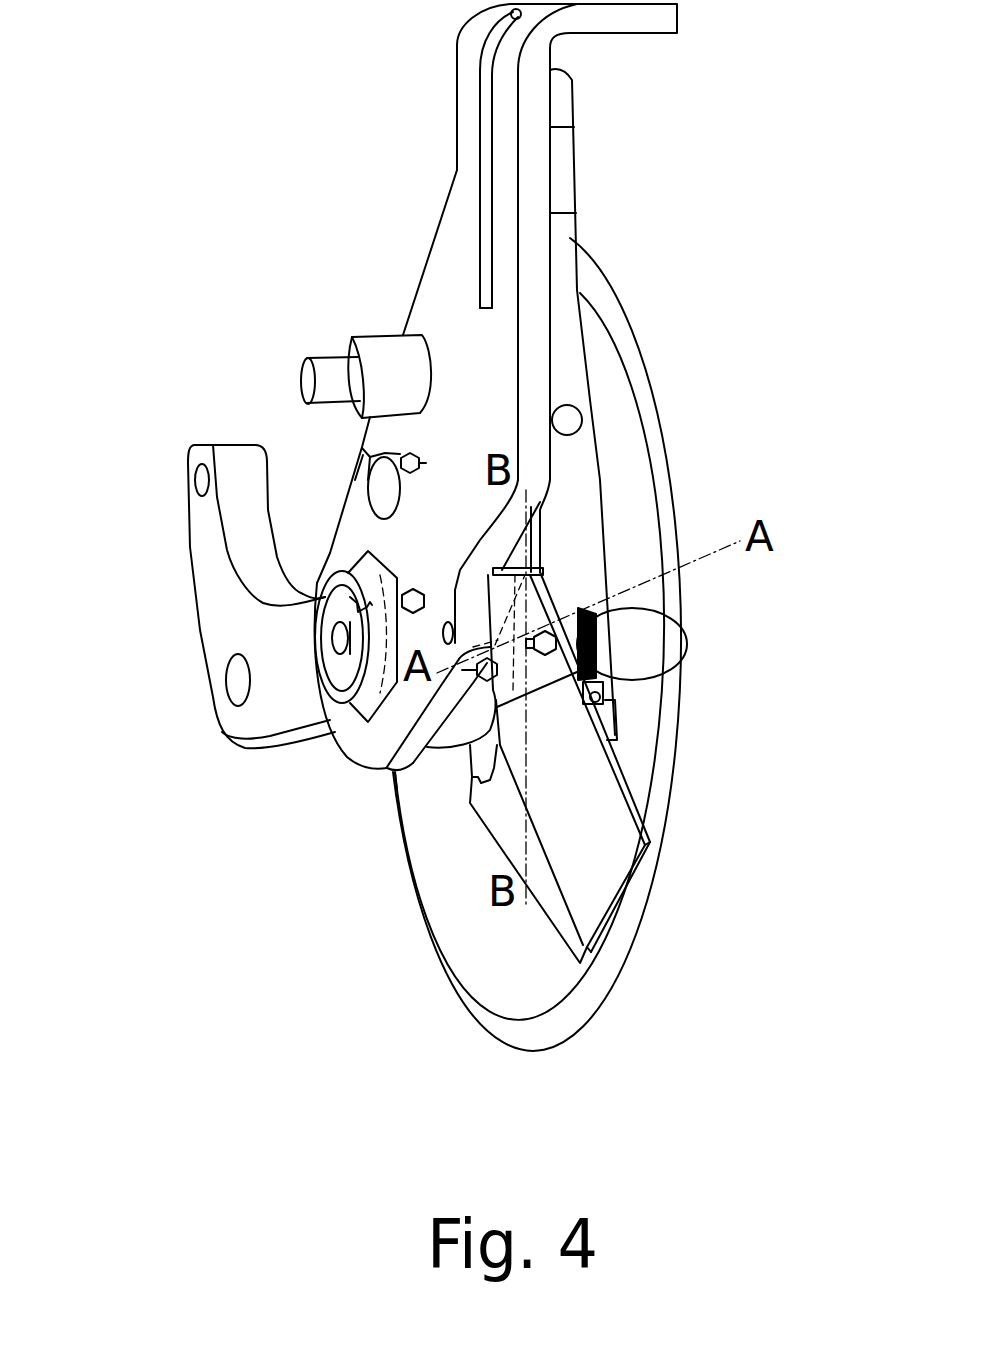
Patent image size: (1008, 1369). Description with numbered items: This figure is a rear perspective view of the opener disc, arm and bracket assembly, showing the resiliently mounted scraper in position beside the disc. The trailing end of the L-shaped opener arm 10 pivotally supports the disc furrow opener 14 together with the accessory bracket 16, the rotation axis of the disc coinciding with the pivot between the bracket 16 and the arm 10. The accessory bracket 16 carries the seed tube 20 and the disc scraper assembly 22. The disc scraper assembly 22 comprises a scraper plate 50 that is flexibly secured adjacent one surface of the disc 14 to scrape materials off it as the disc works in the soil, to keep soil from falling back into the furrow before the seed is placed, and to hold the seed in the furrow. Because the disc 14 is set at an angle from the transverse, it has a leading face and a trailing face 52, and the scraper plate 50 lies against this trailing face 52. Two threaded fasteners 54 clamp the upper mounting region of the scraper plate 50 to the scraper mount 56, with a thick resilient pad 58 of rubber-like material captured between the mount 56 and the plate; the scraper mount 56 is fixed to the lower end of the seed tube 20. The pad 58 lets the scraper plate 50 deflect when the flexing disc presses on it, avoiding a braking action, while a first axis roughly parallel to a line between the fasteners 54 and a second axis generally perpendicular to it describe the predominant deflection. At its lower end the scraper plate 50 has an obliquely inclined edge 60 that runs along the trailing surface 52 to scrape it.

The opener arm 10 is at (222, 647).
The disc furrow opener 14 is at (511, 979).
The accessory bracket 16 is at (440, 290).
The seed tube 20 is at (568, 380).
The disc scraper assembly 22 is at (717, 790).
The scraper plate 50 is at (593, 893).
The trailing face 52 is at (470, 928).
The threaded fasteners 54 is at (580, 613).
The scraper mount 56 is at (605, 672).
The resilient pad 58 is at (552, 580).
The edge 60 is at (490, 838).